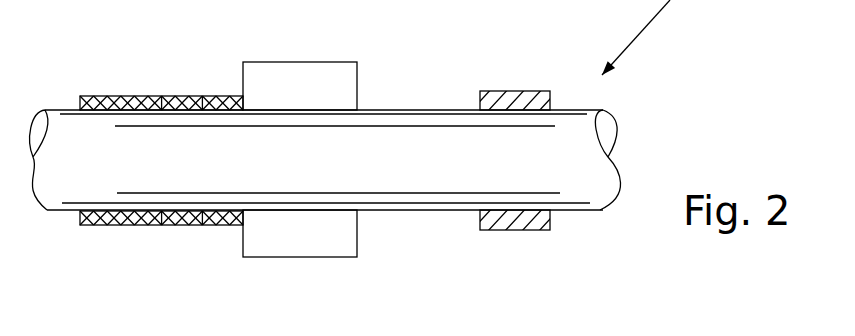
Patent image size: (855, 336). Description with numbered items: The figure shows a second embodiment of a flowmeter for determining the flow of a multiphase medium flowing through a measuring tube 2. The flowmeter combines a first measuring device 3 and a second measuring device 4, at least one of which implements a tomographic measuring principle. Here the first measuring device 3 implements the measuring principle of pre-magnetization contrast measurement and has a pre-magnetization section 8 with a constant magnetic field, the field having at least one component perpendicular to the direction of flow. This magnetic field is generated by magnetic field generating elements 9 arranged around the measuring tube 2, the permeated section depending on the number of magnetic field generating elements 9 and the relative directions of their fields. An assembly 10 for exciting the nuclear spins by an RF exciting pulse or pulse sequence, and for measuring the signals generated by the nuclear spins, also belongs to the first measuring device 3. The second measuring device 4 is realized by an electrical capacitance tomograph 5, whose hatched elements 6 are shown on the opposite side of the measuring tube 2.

The measuring tube 2 is at (418, 137).
The first measuring device 3 is at (160, 243).
The second measuring device 4 is at (473, 256).
The electrical capacitance tomograph 5 is at (513, 97).
The lower clamping element 6 is at (513, 230).
The pre-magnetization section 8 is at (243, 88).
The magnetic field generating elements 9 is at (90, 225).
The assembly 10 is at (285, 240).